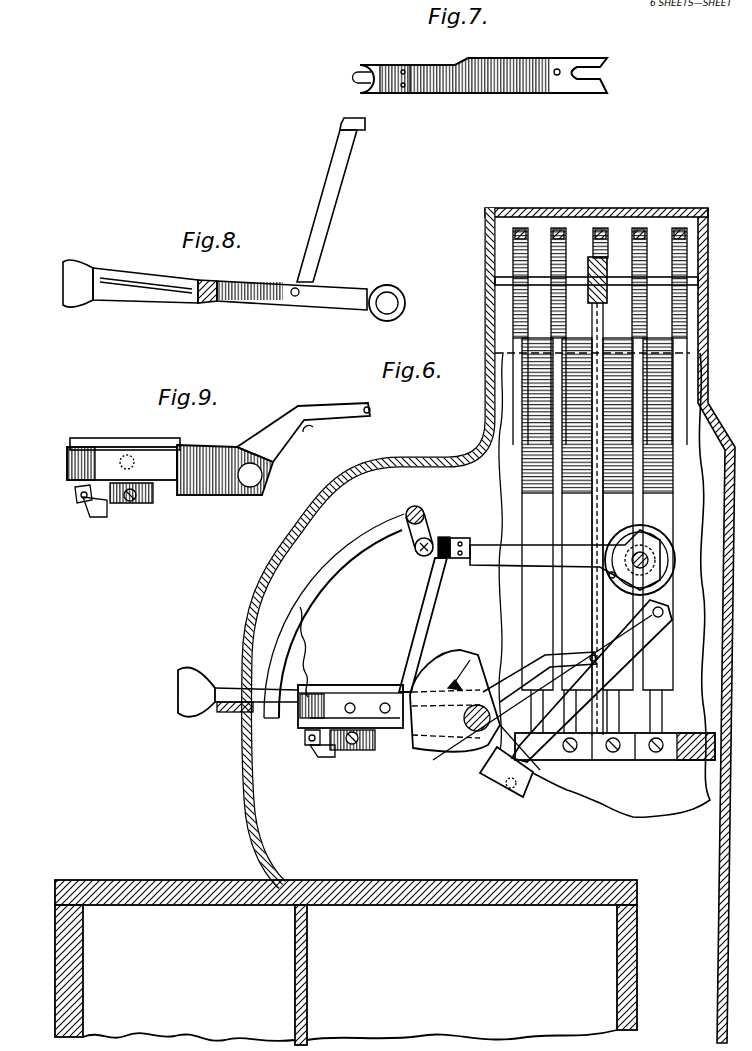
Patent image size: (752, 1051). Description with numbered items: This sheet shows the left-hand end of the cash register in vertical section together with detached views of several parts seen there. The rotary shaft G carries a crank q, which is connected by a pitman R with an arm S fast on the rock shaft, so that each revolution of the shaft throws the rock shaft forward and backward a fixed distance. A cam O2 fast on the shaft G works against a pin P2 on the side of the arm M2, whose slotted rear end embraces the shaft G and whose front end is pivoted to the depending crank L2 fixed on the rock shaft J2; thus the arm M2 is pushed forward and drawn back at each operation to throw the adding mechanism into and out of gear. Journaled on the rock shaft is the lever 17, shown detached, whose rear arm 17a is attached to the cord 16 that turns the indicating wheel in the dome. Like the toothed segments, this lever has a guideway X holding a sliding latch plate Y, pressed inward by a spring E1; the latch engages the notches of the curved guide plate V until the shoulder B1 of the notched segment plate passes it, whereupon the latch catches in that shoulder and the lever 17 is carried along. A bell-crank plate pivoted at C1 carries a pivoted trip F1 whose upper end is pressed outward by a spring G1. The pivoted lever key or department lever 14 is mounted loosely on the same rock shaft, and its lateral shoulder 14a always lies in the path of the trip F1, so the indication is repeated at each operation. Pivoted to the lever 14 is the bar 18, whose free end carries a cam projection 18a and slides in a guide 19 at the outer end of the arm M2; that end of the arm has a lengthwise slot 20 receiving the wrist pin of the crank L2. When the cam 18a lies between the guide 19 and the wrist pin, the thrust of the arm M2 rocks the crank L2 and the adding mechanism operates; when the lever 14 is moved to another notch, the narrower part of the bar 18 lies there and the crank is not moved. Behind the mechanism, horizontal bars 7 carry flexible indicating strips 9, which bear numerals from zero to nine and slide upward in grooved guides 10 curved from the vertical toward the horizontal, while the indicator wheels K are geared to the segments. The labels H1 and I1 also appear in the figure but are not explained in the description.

In FIG. 6, the horizontal bars 7 is at (603, 760).
In FIG. 6, the flexible indicating strips 9 is at (597, 535).
In FIG. 6, the grooved guides 10 is at (558, 228).
In FIG. 8, the pivoted lever key 14 is at (293, 300).
In FIG. 6, the pivoted lever key 14 is at (214, 703).
In FIG. 8, the lateral projection or shoulder 14a is at (210, 303).
In FIG. 6, the cord or wire 16 is at (592, 500).
In FIG. 9, the lever 17 is at (205, 450).
In FIG. 6, the lever 17 is at (360, 690).
In FIG. 9, the rear arm 17a is at (304, 418).
In FIG. 8, the bar 18 is at (330, 192).
In FIG. 6, the bar 18 is at (424, 596).
In FIG. 8, the swell or cam projection 18a is at (338, 123).
In FIG. 7, the guide 19 is at (398, 93).
In FIG. 6, the guide 19 is at (465, 560).
In FIG. 7, the lengthwise slot 20 is at (380, 67).
In FIG. 6, the lengthwise slot 20 is at (428, 553).
In FIG. 7, the arm M2 is at (526, 85).
In FIG. 6, the arm M2 is at (565, 560).
In FIG. 7, the pin P2 is at (561, 70).
In FIG. 6, the pin P2 is at (626, 578).
In FIG. 6, the cam O2 is at (667, 545).
In FIG. 6, the rotary shaft G is at (650, 560).
In FIG. 6, the crank q is at (664, 610).
In FIG. 6, the pitman R is at (662, 635).
In FIG. 6, the shoulder B1 is at (457, 655).
In FIG. 6, the pivot block H1 is at (305, 655).
In FIG. 6, the indicator-wheels K is at (460, 735).
In FIG. 6, the arm S is at (498, 745).
In FIG. 6, the arm I1 is at (528, 792).
In FIG. 6, the rock shaft J2 is at (422, 508).
In FIG. 6, the depending arm L2 is at (432, 540).
In FIG. 6, the curved guide plate V is at (334, 616).
In FIG. 9, the guideway X is at (116, 447).
In FIG. 9, the sliding latch-plate Y is at (67, 461).
In FIG. 9, the spring G1 is at (75, 494).
In FIG. 6, the spring G1 is at (305, 736).
In FIG. 9, the trip F1 is at (88, 508).
In FIG. 6, the trip F1 is at (315, 752).
In FIG. 9, the pivot C1 is at (131, 503).
In FIG. 6, the pivot C1 is at (352, 745).
In FIG. 9, the spring E1 is at (153, 497).
In FIG. 6, the spring E1 is at (372, 745).